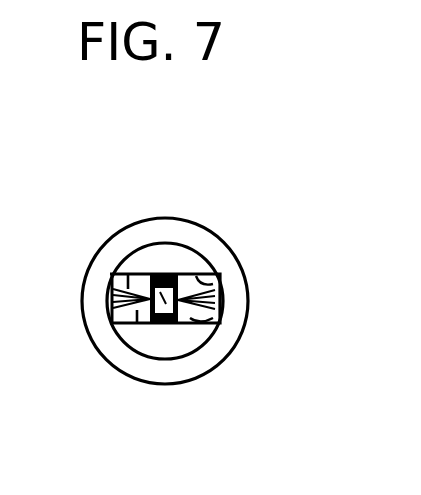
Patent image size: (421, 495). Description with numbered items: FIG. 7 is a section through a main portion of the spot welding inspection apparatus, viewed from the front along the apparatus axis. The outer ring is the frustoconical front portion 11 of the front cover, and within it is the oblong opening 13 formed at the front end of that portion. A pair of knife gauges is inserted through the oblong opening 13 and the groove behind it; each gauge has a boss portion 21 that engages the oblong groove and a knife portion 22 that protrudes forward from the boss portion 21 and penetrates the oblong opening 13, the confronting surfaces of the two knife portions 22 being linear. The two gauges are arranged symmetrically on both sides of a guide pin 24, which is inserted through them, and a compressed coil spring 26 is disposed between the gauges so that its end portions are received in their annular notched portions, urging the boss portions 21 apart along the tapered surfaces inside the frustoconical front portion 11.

The frustoconical front portion 11 is at (237, 312).
The oblong opening 13 is at (218, 277).
The boss portion 21 is at (137, 312).
The knife portion 22 is at (128, 274).
The guide pin 24 is at (163, 322).
The coil spring 26 is at (168, 276).